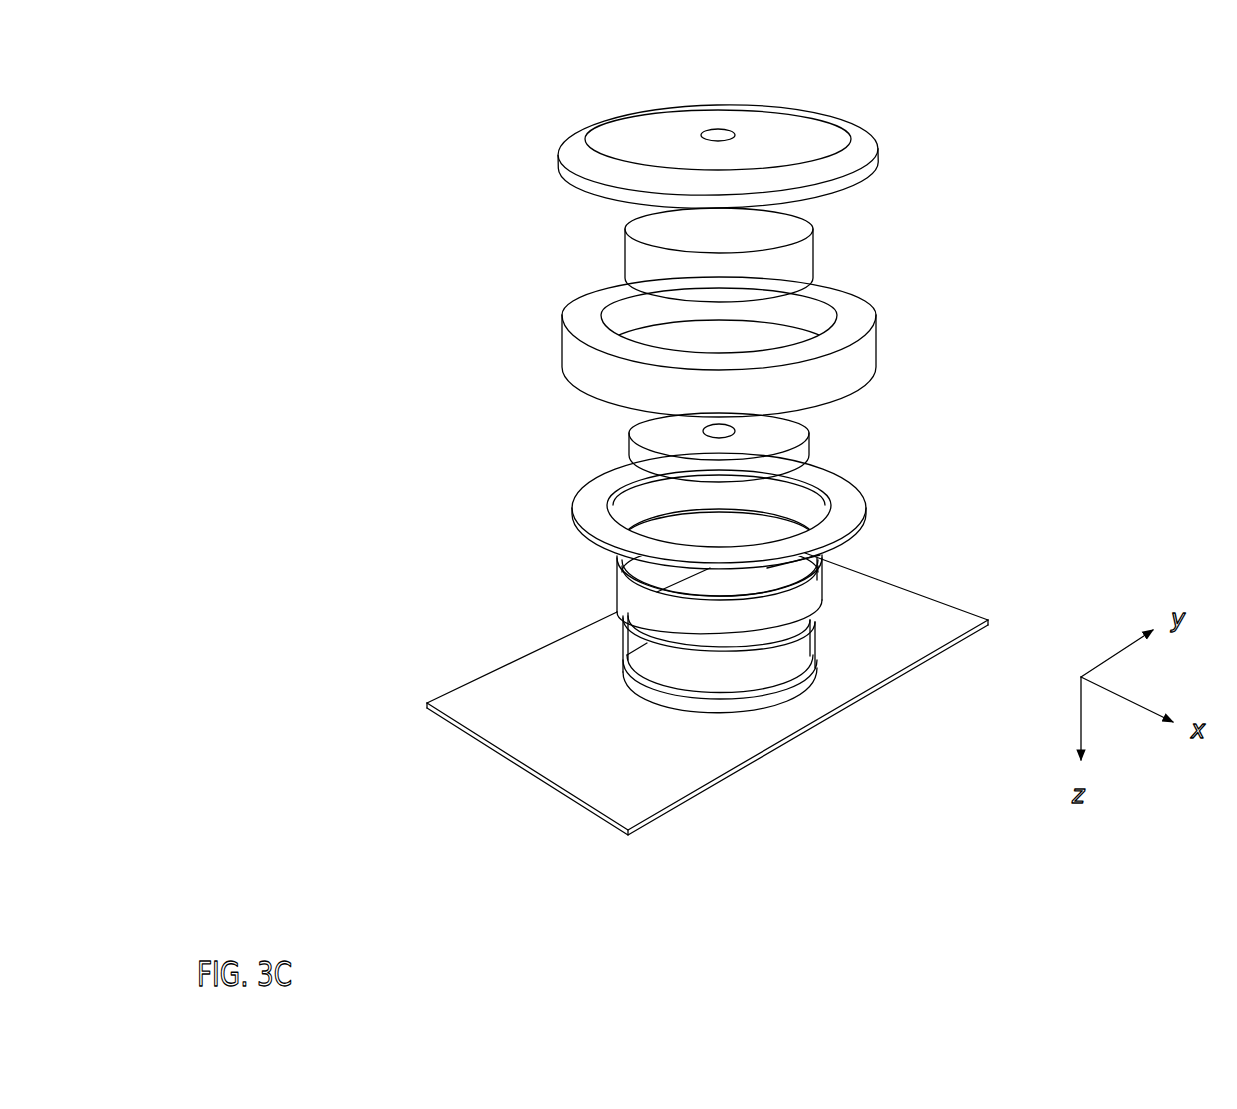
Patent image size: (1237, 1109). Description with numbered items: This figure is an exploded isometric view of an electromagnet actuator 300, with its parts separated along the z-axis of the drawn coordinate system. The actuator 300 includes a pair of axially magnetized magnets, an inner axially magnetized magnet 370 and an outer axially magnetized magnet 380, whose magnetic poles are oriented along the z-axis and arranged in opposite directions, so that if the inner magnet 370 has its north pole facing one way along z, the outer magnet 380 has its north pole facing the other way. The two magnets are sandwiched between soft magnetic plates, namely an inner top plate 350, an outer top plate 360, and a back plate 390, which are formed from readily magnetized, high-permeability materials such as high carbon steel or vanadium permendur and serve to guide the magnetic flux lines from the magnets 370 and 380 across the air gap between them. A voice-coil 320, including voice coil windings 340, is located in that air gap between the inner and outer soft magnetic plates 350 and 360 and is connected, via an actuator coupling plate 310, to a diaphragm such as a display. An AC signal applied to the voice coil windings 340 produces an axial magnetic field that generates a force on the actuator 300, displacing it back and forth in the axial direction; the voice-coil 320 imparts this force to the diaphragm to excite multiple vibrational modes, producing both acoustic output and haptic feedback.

The electromagnet actuator 300 is at (316, 304).
The actuator coupling plate 310 is at (587, 757).
The voice-coil 320 is at (655, 630).
The voice coil windings 340 is at (810, 584).
The inner top plate 350 is at (788, 437).
The outer top plate 360 is at (597, 507).
The inner axially magnetized magnet 370 is at (815, 253).
The outer axially magnetized magnet 380 is at (855, 363).
The back plate 390 is at (822, 140).